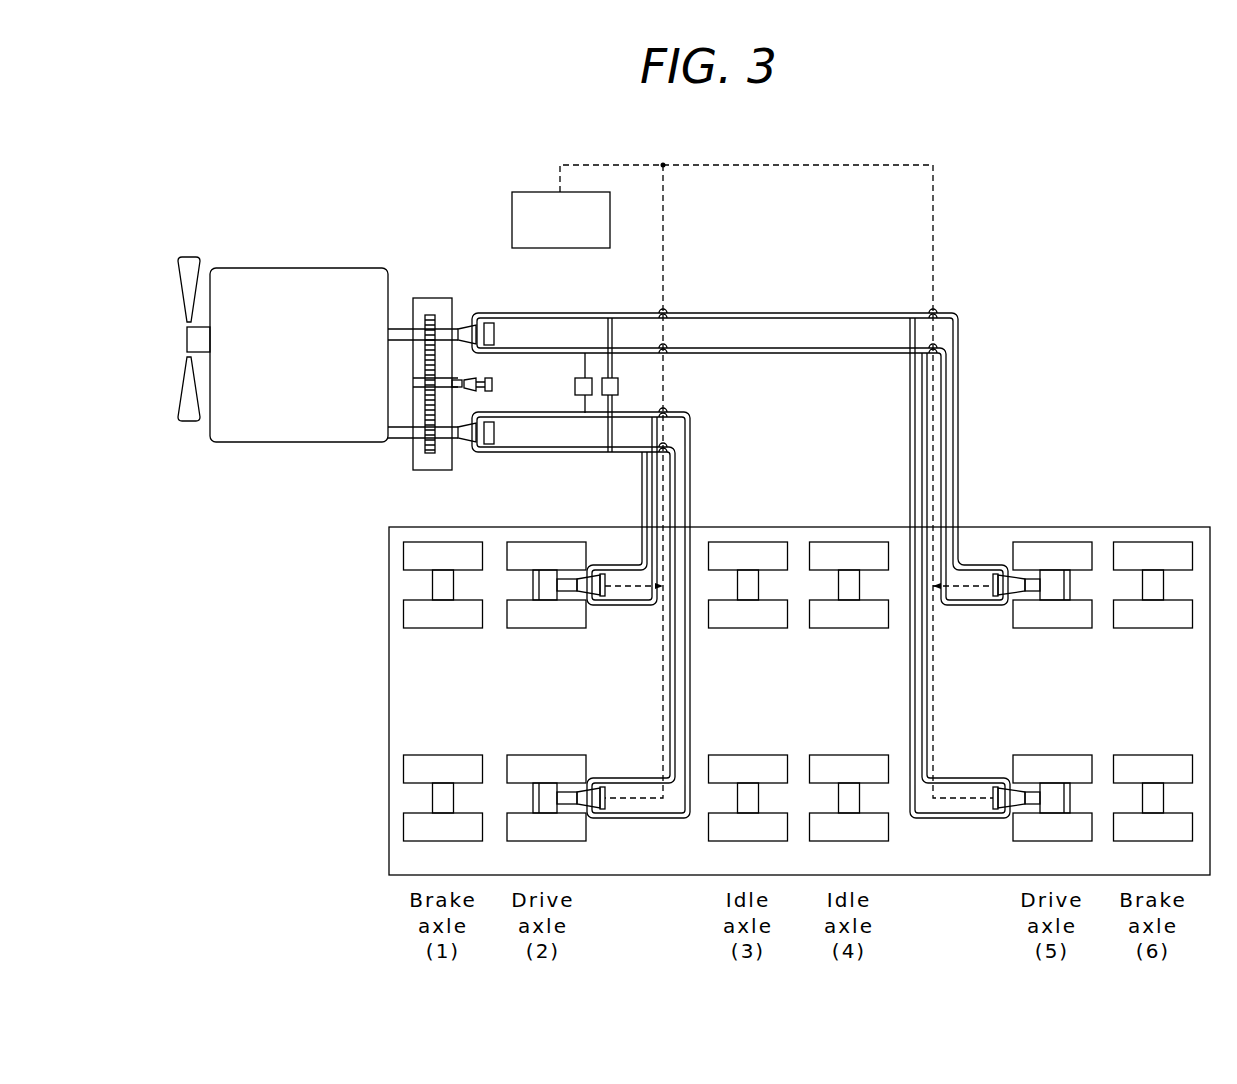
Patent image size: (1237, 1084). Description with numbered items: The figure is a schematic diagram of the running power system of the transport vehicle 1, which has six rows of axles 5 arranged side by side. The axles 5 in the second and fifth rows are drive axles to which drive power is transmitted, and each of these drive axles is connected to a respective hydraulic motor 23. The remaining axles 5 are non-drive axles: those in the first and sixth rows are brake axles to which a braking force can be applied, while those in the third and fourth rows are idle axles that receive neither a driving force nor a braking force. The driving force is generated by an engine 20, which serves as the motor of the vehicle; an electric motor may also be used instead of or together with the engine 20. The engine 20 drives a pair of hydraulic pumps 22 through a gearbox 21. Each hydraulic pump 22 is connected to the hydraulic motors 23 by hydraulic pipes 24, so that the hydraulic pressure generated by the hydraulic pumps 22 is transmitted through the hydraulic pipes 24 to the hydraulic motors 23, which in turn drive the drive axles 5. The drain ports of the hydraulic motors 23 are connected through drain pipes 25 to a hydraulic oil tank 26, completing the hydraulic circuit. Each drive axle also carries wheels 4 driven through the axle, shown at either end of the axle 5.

The transport vehicle 1 is at (1187, 198).
The wheel 4 is at (515, 600).
The axle 5 is at (548, 585).
The engine 20 is at (306, 268).
The gearbox 21 is at (438, 298).
The hydraulic pump 22 is at (467, 330).
The hydraulic motor 23 is at (603, 574).
The hydraulic pipe 24 is at (797, 313).
The drain pipe 25 is at (671, 246).
The hydraulic oil tank 26 is at (540, 191).